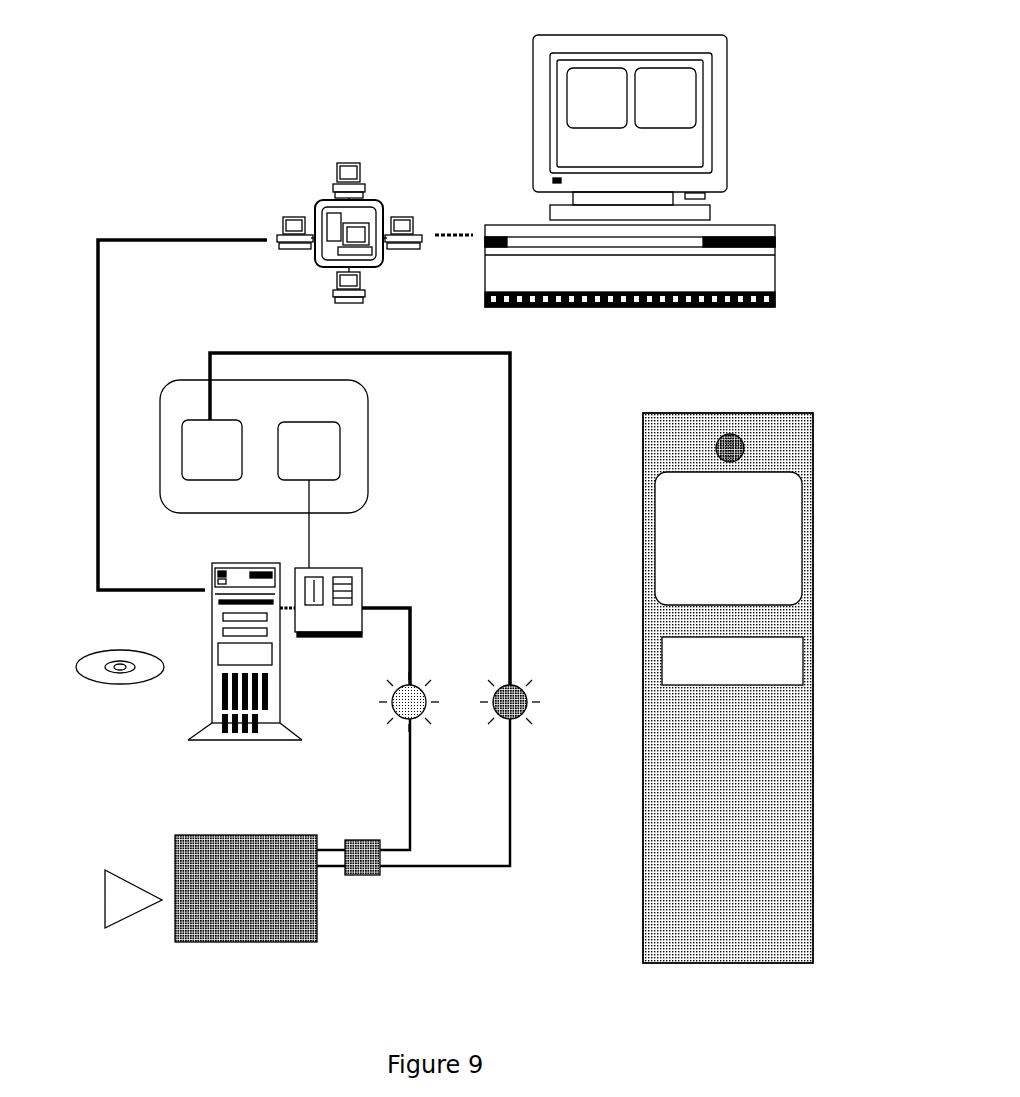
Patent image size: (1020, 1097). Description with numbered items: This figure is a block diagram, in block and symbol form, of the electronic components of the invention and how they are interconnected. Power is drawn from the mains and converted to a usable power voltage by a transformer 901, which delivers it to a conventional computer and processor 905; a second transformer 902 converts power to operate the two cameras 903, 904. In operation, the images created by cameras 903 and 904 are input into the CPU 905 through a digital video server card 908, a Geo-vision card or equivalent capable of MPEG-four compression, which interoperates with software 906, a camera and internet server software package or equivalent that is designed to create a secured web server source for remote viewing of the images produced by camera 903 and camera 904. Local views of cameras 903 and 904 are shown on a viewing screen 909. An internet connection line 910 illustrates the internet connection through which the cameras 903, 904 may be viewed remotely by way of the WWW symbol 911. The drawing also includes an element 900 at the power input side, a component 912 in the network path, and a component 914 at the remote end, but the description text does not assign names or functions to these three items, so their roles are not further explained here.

The audio signal source 900 is at (113, 899).
The transformer 901 is at (238, 888).
The transformer 902 is at (358, 842).
The camera 903 is at (538, 729).
The camera 904 is at (636, 583).
The computer and processor 905 is at (328, 618).
The software 906 is at (218, 600).
The digital video server card 908 is at (360, 609).
The viewing screen 909 is at (452, 316).
The internet connection line 910 is at (536, 318).
The WWW symbol 911 is at (182, 401).
The network 912 is at (349, 217).
The remote computer 914 is at (605, 171).